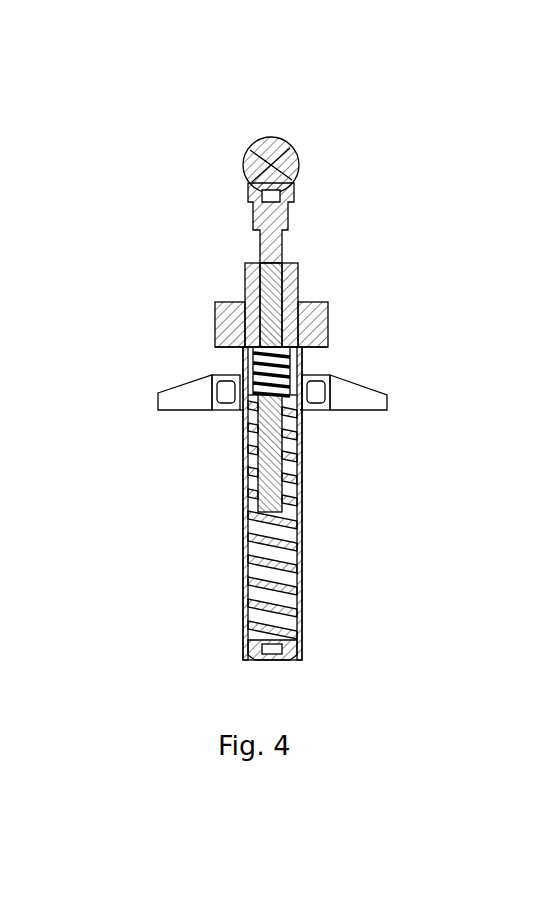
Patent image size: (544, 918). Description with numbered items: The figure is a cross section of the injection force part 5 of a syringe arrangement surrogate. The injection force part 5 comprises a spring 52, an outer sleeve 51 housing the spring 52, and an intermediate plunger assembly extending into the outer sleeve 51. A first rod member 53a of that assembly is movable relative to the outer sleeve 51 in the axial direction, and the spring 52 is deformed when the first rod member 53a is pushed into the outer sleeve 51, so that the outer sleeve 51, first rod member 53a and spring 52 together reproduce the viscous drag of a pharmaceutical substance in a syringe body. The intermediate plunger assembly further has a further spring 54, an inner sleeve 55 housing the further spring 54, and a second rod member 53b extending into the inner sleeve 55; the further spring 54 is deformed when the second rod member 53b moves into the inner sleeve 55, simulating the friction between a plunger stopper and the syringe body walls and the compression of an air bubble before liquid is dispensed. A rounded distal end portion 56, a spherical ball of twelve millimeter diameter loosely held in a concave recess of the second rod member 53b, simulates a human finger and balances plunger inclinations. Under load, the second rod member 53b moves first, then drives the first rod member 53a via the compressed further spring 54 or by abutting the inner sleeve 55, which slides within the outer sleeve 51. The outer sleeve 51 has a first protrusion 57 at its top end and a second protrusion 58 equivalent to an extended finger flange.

The injection force part 5 is at (408, 287).
The outer sleeve 51 is at (243, 551).
The spring 52 is at (300, 597).
The first rod member 53a is at (285, 432).
The second rod member 53b is at (275, 220).
The further spring 54 is at (296, 356).
The inner sleeve 55 is at (252, 352).
The rounded distal end portion 56 is at (263, 150).
The first protrusion 57 is at (233, 321).
The second protrusion 58 is at (193, 401).